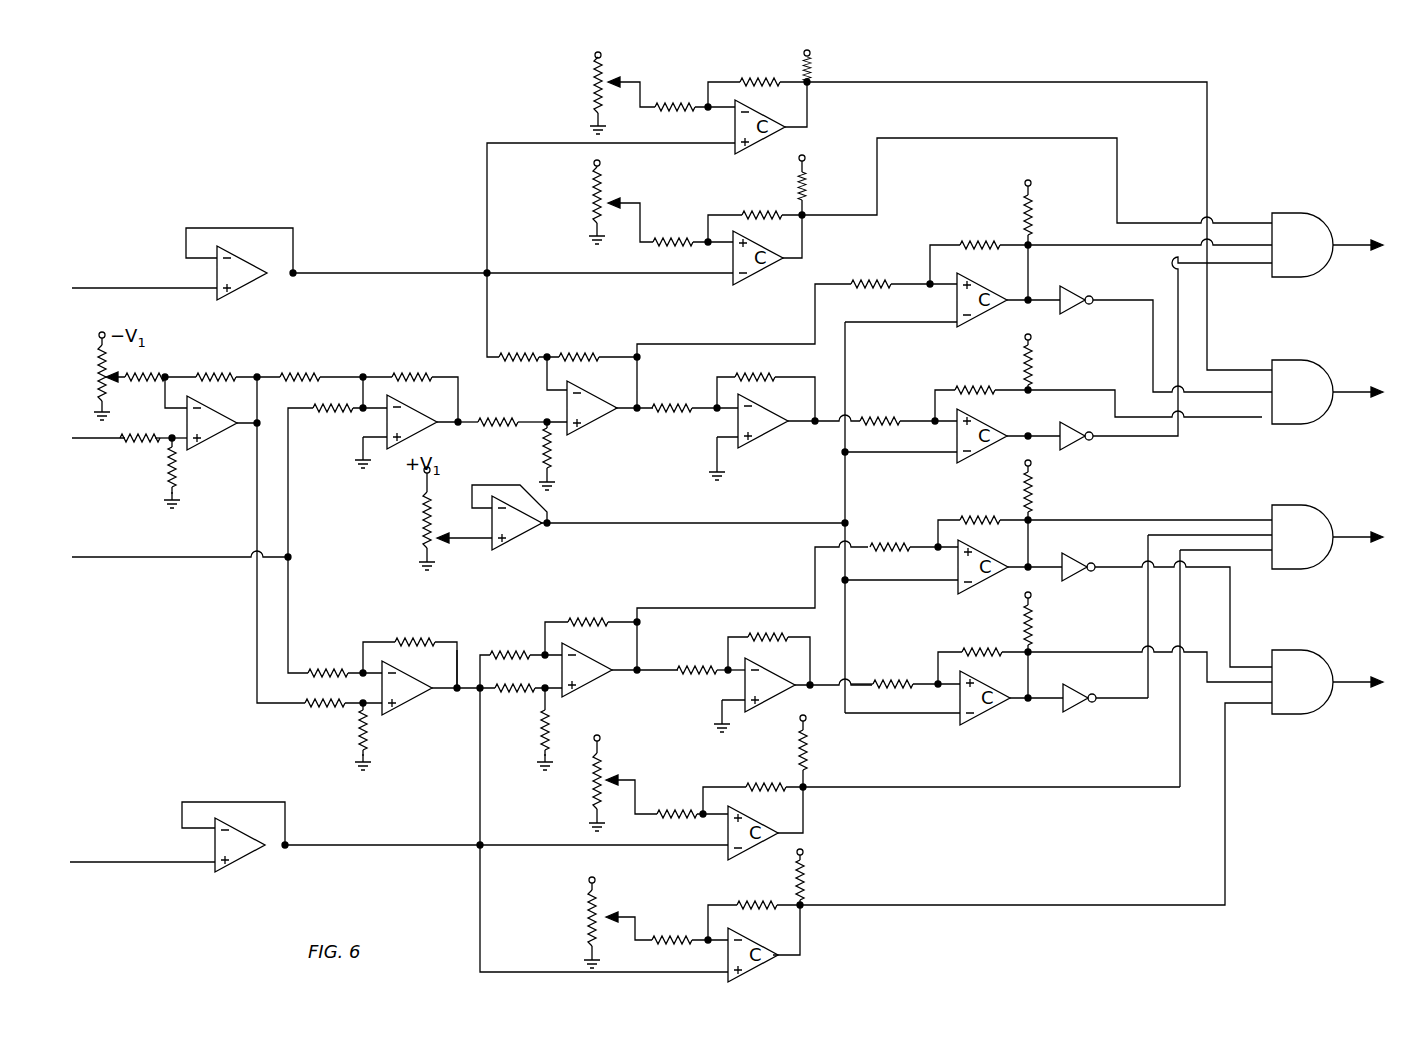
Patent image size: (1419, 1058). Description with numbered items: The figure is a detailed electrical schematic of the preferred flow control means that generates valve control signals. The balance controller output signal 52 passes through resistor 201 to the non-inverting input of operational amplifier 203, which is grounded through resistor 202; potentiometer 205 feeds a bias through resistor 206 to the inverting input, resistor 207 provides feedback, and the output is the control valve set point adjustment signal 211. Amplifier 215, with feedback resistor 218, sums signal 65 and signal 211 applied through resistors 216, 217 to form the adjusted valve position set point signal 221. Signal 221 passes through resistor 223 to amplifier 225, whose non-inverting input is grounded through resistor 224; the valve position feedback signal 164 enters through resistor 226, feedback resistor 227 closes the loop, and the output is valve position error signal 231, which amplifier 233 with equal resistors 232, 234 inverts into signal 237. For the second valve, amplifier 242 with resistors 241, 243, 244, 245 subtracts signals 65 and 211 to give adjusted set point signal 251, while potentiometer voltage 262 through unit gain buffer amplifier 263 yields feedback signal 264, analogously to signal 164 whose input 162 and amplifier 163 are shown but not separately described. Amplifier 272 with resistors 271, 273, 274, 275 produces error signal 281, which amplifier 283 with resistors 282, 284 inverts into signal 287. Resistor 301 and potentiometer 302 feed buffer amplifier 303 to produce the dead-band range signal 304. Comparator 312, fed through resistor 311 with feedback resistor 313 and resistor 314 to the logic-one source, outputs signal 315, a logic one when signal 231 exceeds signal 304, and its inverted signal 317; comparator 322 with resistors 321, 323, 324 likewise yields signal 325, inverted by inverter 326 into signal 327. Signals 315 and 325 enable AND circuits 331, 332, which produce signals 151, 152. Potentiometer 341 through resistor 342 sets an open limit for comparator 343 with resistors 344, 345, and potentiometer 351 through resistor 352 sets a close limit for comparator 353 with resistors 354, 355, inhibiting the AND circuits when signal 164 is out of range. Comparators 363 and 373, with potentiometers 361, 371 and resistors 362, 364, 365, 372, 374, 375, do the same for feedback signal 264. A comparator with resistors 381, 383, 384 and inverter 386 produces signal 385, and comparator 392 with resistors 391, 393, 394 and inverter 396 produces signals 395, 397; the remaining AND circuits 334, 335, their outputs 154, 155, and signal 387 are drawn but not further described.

The balance controller output signal 52 is at (88, 442).
The preliminary valve position set point signal 65 is at (106, 557).
The signal 151 is at (1349, 249).
The signal 152 is at (1346, 396).
The output line 154 is at (1349, 536).
The output line 155 is at (1342, 687).
The input line 162 is at (137, 288).
The buffer amplifier 163 is at (241, 287).
The valve position feedback signal 164 is at (387, 273).
The resistor 201 is at (136, 448).
The resistor 202 is at (160, 471).
The operational amplifier 203 is at (205, 442).
The potentiometer 205 is at (94, 379).
The resistor 206 is at (138, 379).
The resistor 207 is at (210, 375).
The control valve set point adjustment signal 211 is at (256, 524).
The operational amplifier 215 is at (422, 435).
The resistor 216 is at (319, 416).
The resistor 217 is at (292, 375).
The feedback resistor 218 is at (412, 374).
The adjusted valve position set point signal 221 is at (459, 422).
The resistor 223 is at (498, 430).
The resistor 224 is at (551, 453).
The operational amplifier 225 is at (594, 428).
The resistor 226 is at (503, 357).
The feedback resistor 227 is at (572, 357).
The valve position error signal 231 is at (685, 348).
The resistor 232 is at (662, 408).
The amplifier 233 is at (755, 448).
The feedback resistor 234 is at (755, 380).
The amplifier output signal 237 is at (831, 426).
The resistor 241 is at (312, 672).
The operational amplifier 242 is at (405, 707).
The resistor 243 is at (326, 711).
The resistor 244 is at (372, 740).
The feedback resistor 245 is at (412, 644).
The adjusted valve position set point signal 251 is at (455, 665).
The potentiometer voltage 262 is at (121, 864).
The unit gain buffer amplifier 263 is at (240, 864).
The valve position feedback signal 264 is at (382, 847).
The resistor 271 is at (522, 698).
The operational amplifier 272 is at (586, 684).
The resistor 273 is at (518, 653).
The resistor 274 is at (540, 734).
The feedback resistor 275 is at (588, 617).
The valve position error signal 281 is at (667, 608).
The resistor 282 is at (696, 669).
The amplifier 283 is at (764, 712).
The feedback resistor 284 is at (752, 637).
The output signal 287 is at (860, 680).
The resistor 301 is at (418, 499).
The potentiometer resistor 302 is at (418, 546).
The unit gain buffer amplifier 303 is at (522, 542).
The dead-band range signal 304 is at (665, 528).
The resistor 311 is at (870, 284).
The comparator 312 is at (970, 335).
The large resistor 313 is at (992, 243).
The resistor 314 is at (1030, 230).
The output signal 315 is at (1032, 289).
The output signal 317 is at (1105, 306).
The resistor 321 is at (862, 423).
The comparator 322 is at (972, 465).
The resistor 323 is at (963, 390).
The resistor 324 is at (1031, 385).
The digital output signal 325 is at (1080, 396).
The digital inverter 326 is at (1072, 449).
The signal 327 is at (1142, 441).
The AND circuit 331 is at (1284, 219).
The AND circuit 332 is at (1282, 369).
The AND gate 334 is at (1282, 514).
The AND gate 335 is at (1282, 654).
The potentiometer 341 is at (584, 201).
The resistor 342 is at (660, 253).
The comparator 343 is at (744, 288).
The large resistor 344 is at (744, 216).
The resistor 345 is at (806, 204).
The potentiometer 351 is at (590, 84).
The resistor 352 is at (651, 108).
The comparator 353 is at (742, 157).
The resistor 354 is at (744, 83).
The resistor 355 is at (798, 65).
The potentiometer 361 is at (590, 789).
The resistor 362 is at (655, 816).
The comparator 363 is at (752, 855).
The resistor 364 is at (758, 787).
The resistor 365 is at (810, 757).
The potentiometer 371 is at (586, 908).
The resistor 372 is at (684, 939).
The comparator 373 is at (766, 969).
The resistor 374 is at (738, 908).
The resistor 375 is at (810, 890).
The resistor 381 is at (873, 554).
The resistor 383 is at (966, 520).
The resistor 384 is at (1030, 515).
The output signal 385 is at (1080, 519).
The inverter 386 is at (1072, 566).
The conductor 387 is at (1111, 577).
The resistor 391 is at (884, 688).
The comparator 392 is at (978, 725).
The resistor 393 is at (986, 653).
The resistor 394 is at (1033, 637).
The signal 395 is at (1070, 656).
The inverter 396 is at (1076, 699).
The signal 397 is at (1126, 707).